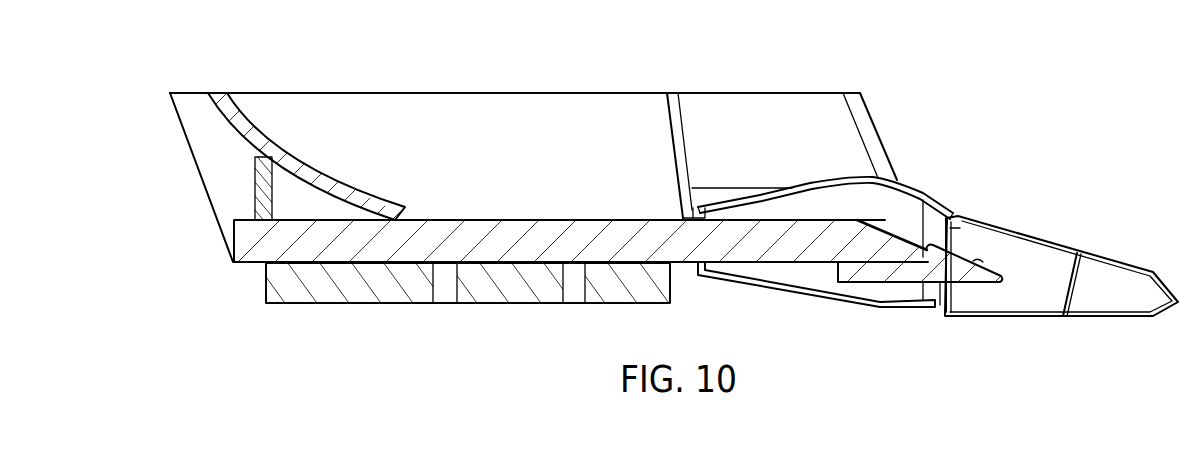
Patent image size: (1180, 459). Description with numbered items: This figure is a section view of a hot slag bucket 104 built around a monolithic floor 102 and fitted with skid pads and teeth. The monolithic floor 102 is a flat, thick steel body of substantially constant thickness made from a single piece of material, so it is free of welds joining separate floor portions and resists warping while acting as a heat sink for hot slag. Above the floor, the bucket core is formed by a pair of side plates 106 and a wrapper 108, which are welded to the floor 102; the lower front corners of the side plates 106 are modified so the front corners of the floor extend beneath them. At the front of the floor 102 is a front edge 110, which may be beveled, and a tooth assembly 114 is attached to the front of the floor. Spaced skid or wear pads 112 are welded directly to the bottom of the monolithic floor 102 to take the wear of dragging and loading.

The monolithic floor 102 is at (638, 224).
The monolithic floor bucket 104 is at (865, 173).
The side plates 106 is at (428, 105).
The wrapper 108 is at (317, 145).
The front edge 110 is at (872, 252).
The skid or wear pads 112 is at (375, 290).
The tooth assembly 114 is at (978, 300).